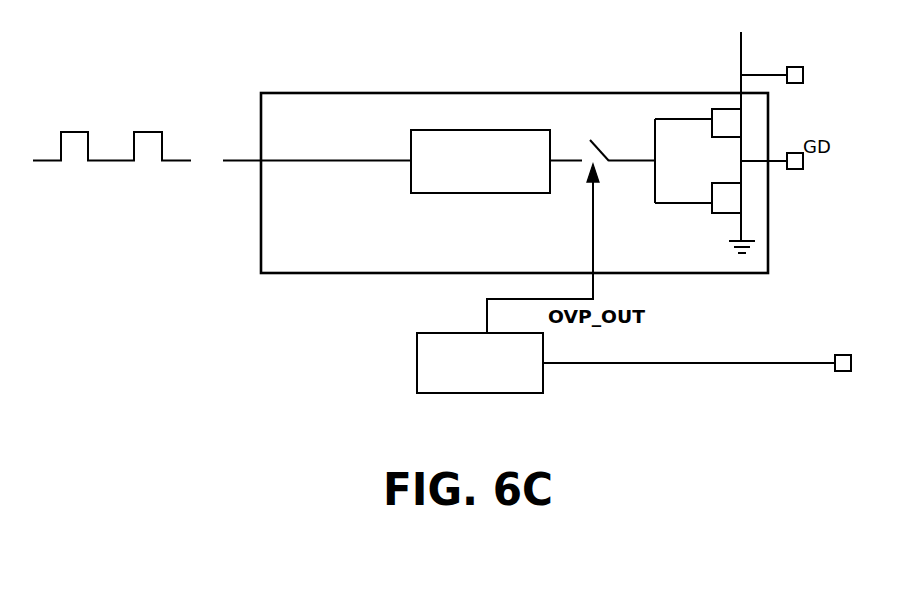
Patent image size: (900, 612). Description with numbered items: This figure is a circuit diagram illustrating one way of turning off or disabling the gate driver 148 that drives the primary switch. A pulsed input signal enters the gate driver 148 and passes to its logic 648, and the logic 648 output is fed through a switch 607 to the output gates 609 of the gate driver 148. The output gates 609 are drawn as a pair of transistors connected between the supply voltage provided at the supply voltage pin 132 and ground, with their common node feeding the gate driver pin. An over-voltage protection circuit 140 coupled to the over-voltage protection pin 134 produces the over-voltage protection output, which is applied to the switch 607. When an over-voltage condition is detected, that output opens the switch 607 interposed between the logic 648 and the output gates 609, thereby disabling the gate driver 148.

The gate driver 148 is at (543, 242).
The logic 648 is at (466, 186).
The switch 607 is at (601, 149).
The OVP circuit 140 is at (466, 386).
The over-voltage protection (OVP) pin 134 is at (838, 355).
The output gates 609 is at (754, 202).
The supply voltage pin (AUXIN) 132 is at (803, 75).